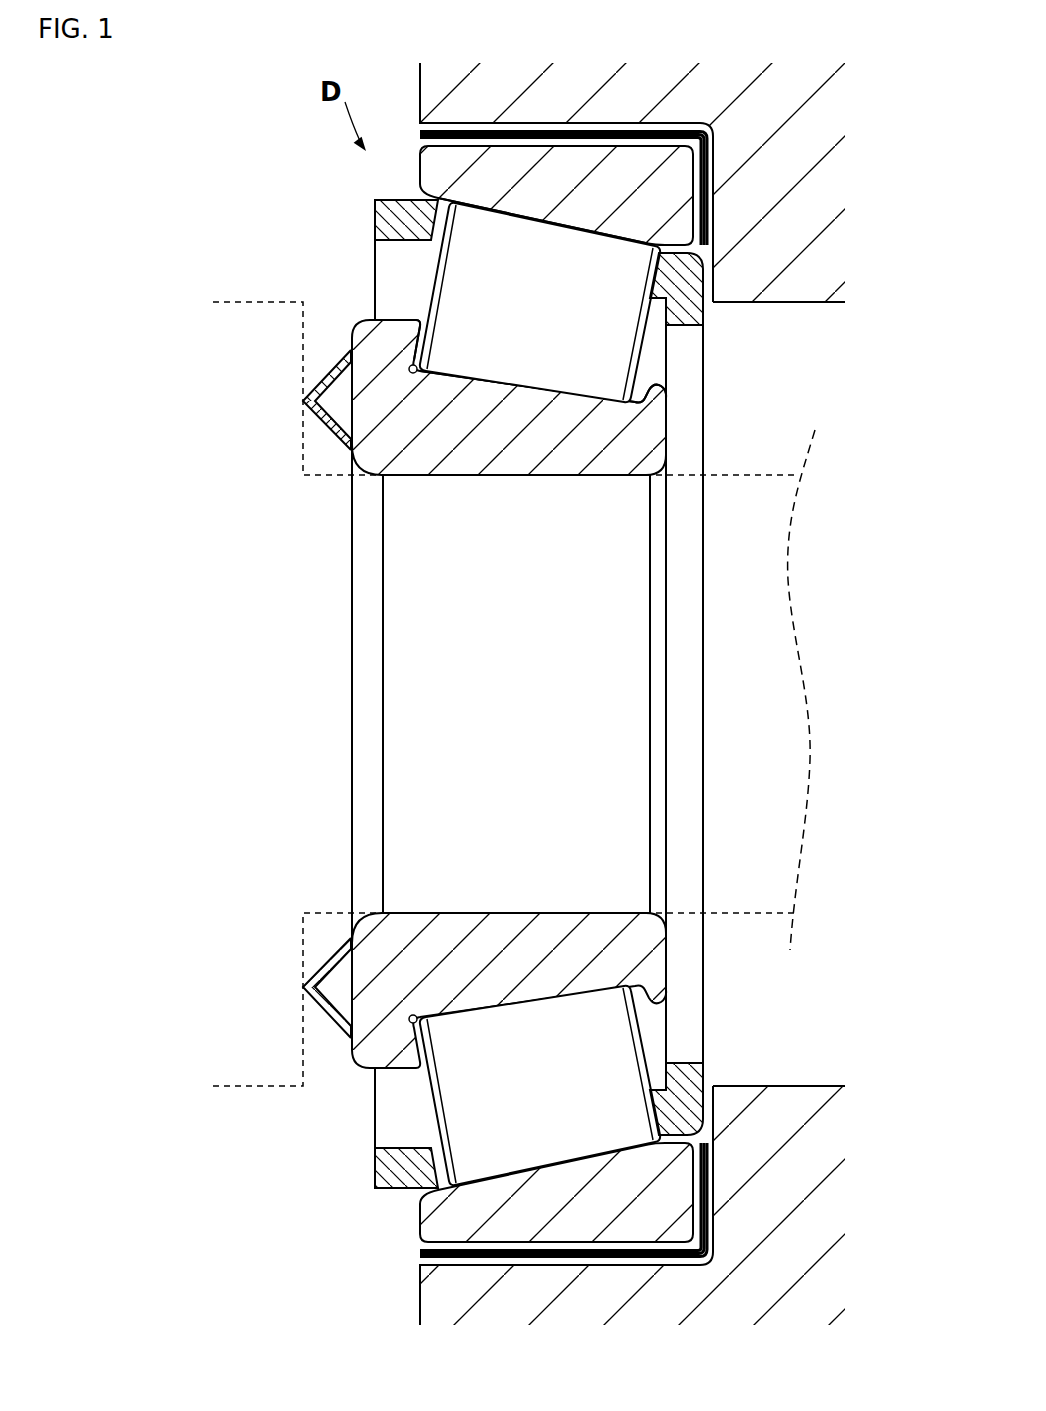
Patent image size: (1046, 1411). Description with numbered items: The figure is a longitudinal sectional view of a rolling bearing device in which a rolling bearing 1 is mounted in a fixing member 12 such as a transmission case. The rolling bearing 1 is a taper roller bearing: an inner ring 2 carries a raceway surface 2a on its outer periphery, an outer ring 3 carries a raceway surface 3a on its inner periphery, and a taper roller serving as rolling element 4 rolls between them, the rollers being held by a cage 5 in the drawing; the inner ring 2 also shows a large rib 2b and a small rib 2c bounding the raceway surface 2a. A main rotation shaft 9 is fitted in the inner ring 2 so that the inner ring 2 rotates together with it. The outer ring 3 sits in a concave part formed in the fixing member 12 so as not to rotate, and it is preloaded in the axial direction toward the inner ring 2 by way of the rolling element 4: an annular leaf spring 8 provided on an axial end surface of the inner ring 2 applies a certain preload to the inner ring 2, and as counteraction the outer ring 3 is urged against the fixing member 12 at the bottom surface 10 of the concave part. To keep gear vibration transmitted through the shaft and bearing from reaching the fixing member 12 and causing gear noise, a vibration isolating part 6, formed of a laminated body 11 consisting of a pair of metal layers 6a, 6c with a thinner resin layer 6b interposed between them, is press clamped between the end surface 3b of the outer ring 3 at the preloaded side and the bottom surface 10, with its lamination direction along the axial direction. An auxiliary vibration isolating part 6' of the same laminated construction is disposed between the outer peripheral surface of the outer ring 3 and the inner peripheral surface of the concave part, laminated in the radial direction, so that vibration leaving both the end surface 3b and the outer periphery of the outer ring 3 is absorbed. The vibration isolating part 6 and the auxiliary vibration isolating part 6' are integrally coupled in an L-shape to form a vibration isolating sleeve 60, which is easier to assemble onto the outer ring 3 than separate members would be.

The rolling bearing 1 is at (306, 131).
The inner ring 2 is at (513, 693).
The raceway surface 2a is at (528, 410).
The large rib of inner ring 2b is at (658, 395).
The small rib of inner ring 2c is at (390, 342).
The outer ring 3 is at (571, 679).
The raceway surface 3a is at (565, 227).
The end surface 3b is at (697, 210).
The rolling element 4 is at (467, 292).
The cage 5 is at (387, 219).
The vibration isolating part 6 is at (634, 694).
The auxiliary vibration isolating part 6' is at (628, 679).
The metal layer 6a is at (697, 214).
The resin layer 6b is at (702, 183).
The metal layer 6c is at (712, 158).
The annular leaf spring 8 is at (323, 432).
The main rotation shaft 9 is at (802, 848).
The bottom surface 10 is at (717, 270).
The laminated body 11 is at (634, 694).
The fixing member 12 is at (790, 295).
The vibration isolating sleeve 60 is at (654, 679).